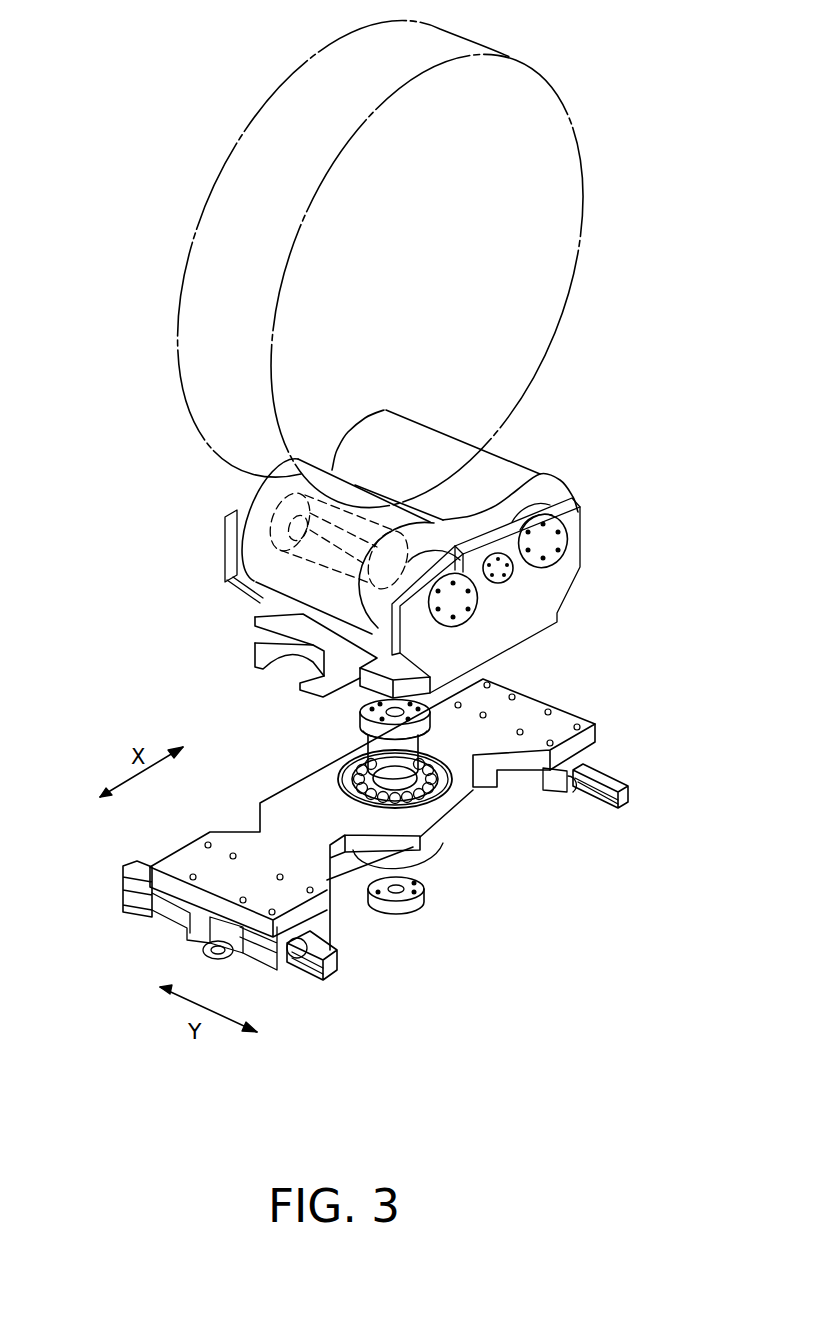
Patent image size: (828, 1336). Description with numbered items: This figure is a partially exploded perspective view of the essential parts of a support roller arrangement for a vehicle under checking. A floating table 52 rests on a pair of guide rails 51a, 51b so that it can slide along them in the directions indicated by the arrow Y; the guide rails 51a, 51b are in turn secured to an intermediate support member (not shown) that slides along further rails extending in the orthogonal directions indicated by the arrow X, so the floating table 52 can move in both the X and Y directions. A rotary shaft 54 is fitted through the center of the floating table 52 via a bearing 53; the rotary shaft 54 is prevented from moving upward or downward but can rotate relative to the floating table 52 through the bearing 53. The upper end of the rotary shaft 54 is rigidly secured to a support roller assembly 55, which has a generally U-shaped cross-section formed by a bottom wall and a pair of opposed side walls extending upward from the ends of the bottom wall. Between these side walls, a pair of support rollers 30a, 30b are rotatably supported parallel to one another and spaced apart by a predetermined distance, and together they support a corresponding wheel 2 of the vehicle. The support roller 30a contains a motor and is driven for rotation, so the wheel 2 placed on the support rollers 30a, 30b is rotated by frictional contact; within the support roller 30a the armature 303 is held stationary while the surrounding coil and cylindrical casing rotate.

The wheel 2 is at (512, 58).
The support roller 30a is at (262, 590).
The support roller 30b is at (524, 460).
The armature 303 is at (258, 506).
The support roller assembly 55 is at (537, 632).
The floating table 52 is at (563, 713).
The rotary shaft 54 is at (420, 746).
The bearing 53 is at (430, 808).
The guide rail 51a is at (336, 975).
The guide rail 51b is at (622, 807).